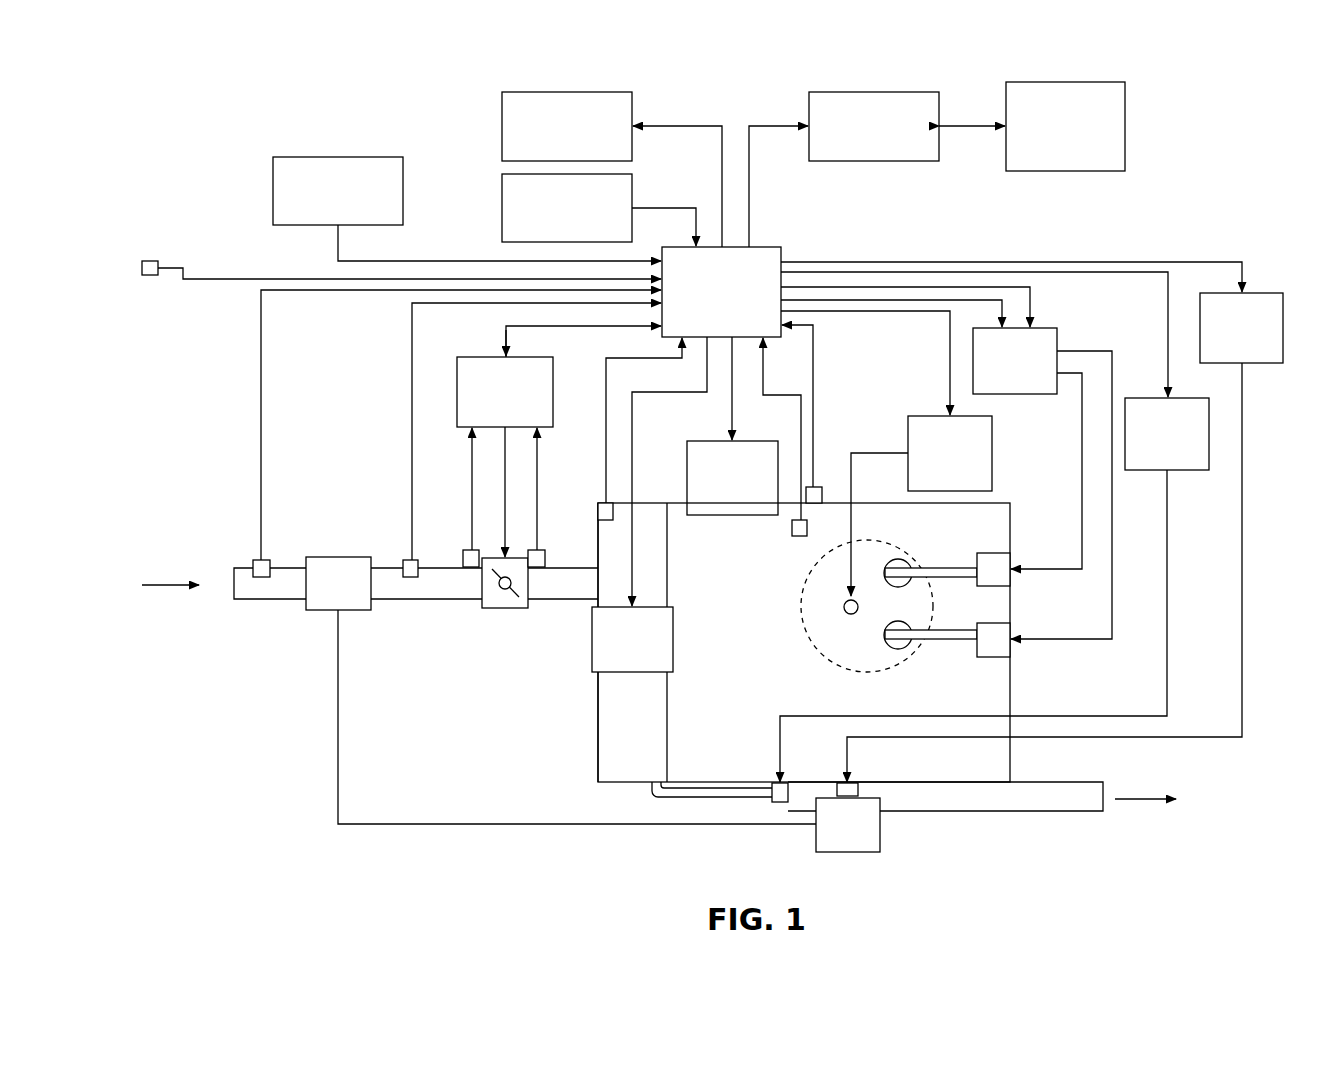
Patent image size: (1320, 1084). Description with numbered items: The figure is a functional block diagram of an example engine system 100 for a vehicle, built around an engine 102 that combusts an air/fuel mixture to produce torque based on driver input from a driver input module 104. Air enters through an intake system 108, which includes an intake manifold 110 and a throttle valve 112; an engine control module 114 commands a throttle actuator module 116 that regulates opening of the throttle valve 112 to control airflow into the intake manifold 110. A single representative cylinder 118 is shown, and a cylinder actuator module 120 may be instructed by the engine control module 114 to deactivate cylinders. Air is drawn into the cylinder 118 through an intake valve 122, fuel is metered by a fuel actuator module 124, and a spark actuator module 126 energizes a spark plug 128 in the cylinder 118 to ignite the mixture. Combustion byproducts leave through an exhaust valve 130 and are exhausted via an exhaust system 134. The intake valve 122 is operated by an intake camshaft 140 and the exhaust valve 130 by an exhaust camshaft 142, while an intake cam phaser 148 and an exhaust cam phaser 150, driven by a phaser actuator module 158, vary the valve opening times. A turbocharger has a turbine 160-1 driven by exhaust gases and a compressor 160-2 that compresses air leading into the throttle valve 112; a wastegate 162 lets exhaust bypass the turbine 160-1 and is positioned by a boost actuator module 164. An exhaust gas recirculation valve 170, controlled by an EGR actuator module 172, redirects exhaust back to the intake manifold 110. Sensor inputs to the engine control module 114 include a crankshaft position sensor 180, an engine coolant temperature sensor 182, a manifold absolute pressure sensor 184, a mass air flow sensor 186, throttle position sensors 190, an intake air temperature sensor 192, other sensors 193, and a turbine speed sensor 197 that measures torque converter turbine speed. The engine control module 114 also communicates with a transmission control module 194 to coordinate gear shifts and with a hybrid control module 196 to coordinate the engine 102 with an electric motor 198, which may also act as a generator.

The engine system 100 is at (206, 146).
The engine 102 is at (1010, 516).
The driver input module 104 is at (502, 207).
The intake system 108 is at (228, 636).
The intake manifold 110 is at (598, 728).
The throttle valve 112 is at (507, 608).
The engine control module 114 is at (781, 252).
The throttle actuator module 116 is at (483, 358).
The cylinder 118 is at (826, 665).
The cylinder actuator module 120 is at (745, 441).
The intake valve 122 is at (900, 559).
The fuel actuator module 124 is at (650, 672).
The spark actuator module 126 is at (992, 454).
The spark plug 128 is at (844, 607).
The exhaust valve 130 is at (898, 649).
The exhaust system 134 is at (1076, 812).
The intake camshaft 140 is at (950, 568).
The exhaust camshaft 142 is at (952, 639).
The intake cam phaser 148 is at (993, 553).
The exhaust cam phaser 150 is at (993, 657).
The phaser actuator module 158 is at (1057, 338).
The turbine 160-1 is at (880, 830).
The compressor 160-2 is at (330, 610).
The wastegate 162 is at (858, 788).
The boost actuator module 164 is at (1242, 363).
The exhaust gas recirculation valve 170 is at (780, 802).
The EGR actuator module 172 is at (1167, 470).
The crankshaft position sensor 180 is at (813, 487).
The engine coolant temperature sensor 182 is at (801, 536).
The manifold absolute pressure sensor 184 is at (606, 503).
The mass air flow sensor 186 is at (403, 560).
The throttle position sensor 190 is at (470, 567).
The intake air temperature sensor 192 is at (253, 565).
The other sensors 193 is at (338, 157).
The transmission control module 194 is at (502, 147).
The hybrid control module 196 is at (872, 161).
The turbine speed sensor 197 is at (150, 261).
The electric motor 198 is at (1075, 171).